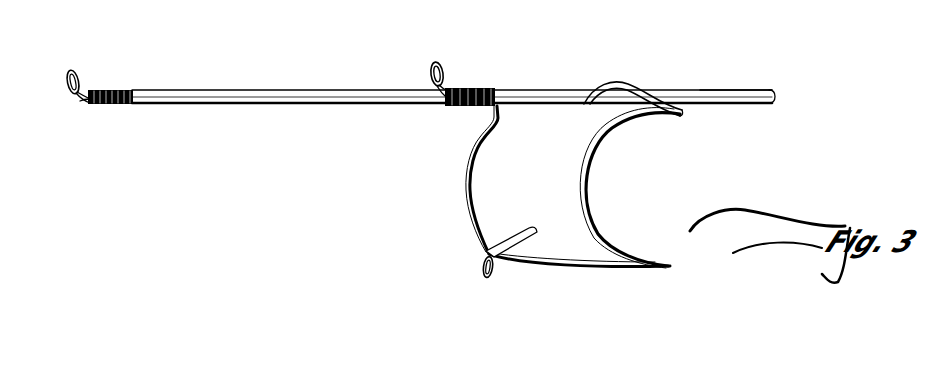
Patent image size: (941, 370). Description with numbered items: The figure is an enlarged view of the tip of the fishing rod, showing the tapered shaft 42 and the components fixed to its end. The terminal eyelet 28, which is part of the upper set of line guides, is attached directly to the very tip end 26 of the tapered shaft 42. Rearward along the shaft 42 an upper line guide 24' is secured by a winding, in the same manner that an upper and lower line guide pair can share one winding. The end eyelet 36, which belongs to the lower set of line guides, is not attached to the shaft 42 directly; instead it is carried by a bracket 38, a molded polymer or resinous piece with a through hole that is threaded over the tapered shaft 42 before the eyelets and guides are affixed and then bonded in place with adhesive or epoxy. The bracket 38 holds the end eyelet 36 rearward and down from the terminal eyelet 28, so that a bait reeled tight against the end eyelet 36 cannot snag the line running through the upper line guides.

The upper line guide 24' is at (458, 67).
The tip end 26 is at (78, 106).
The terminal eyelet 28 is at (72, 70).
The end eyelet 36 is at (485, 255).
The bracket 38 is at (577, 165).
The tapered shaft 42 is at (747, 97).